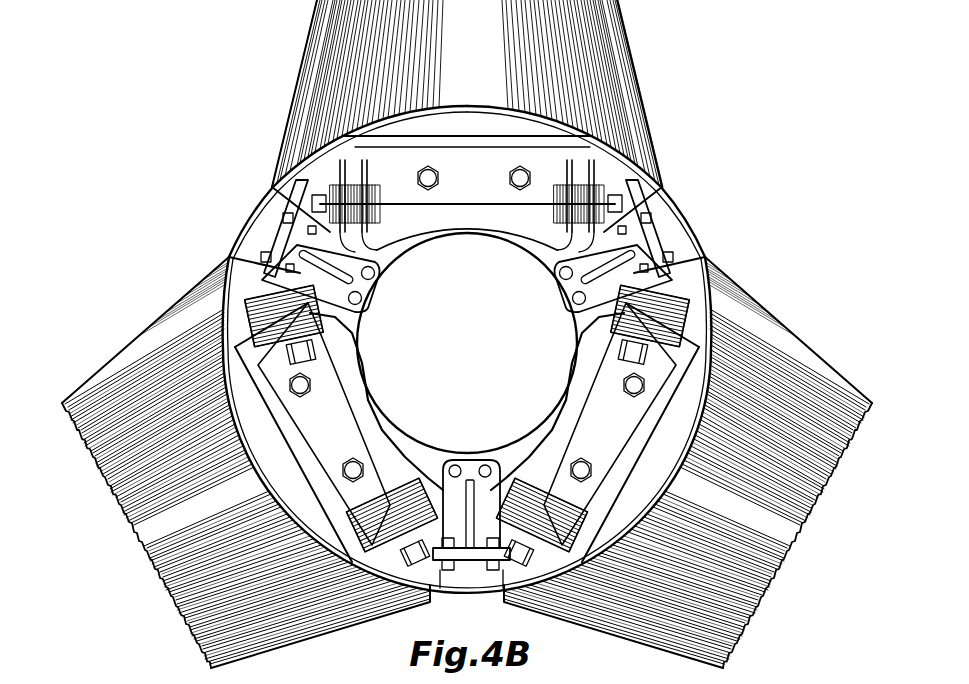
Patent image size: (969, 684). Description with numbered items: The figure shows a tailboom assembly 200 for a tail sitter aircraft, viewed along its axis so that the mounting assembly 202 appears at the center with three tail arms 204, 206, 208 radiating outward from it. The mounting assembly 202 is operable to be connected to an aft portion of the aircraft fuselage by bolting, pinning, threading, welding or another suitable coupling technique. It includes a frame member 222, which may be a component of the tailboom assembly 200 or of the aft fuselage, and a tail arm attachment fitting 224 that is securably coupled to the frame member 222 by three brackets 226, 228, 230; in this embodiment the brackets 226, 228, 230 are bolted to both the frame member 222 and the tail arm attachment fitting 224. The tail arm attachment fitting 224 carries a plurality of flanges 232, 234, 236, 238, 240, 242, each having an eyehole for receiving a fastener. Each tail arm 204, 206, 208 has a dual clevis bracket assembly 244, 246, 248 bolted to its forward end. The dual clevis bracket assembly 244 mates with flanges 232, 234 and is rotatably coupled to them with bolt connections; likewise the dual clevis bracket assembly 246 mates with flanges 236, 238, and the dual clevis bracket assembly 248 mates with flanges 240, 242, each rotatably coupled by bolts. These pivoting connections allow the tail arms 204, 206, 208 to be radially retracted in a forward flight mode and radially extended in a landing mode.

The tailboom assembly 200 is at (778, 184).
The mounting assembly 202 is at (656, 205).
The tail arm 204 is at (328, 36).
The tail arm 206 is at (803, 358).
The tail arm 208 is at (132, 358).
The frame member 222 is at (283, 212).
The tail arm attachment fitting 224 is at (372, 397).
The bracket 226 is at (570, 288).
The bracket 228 is at (368, 288).
The bracket 230 is at (469, 468).
The flange 232 is at (608, 142).
The flange 234 is at (325, 137).
The flange 236 is at (252, 338).
The flange 238 is at (349, 562).
The flange 240 is at (588, 562).
The flange 242 is at (684, 338).
The dual clevis bracket assembly 244 is at (455, 188).
The dual clevis bracket assembly 246 is at (301, 442).
The dual clevis bracket assembly 248 is at (603, 442).